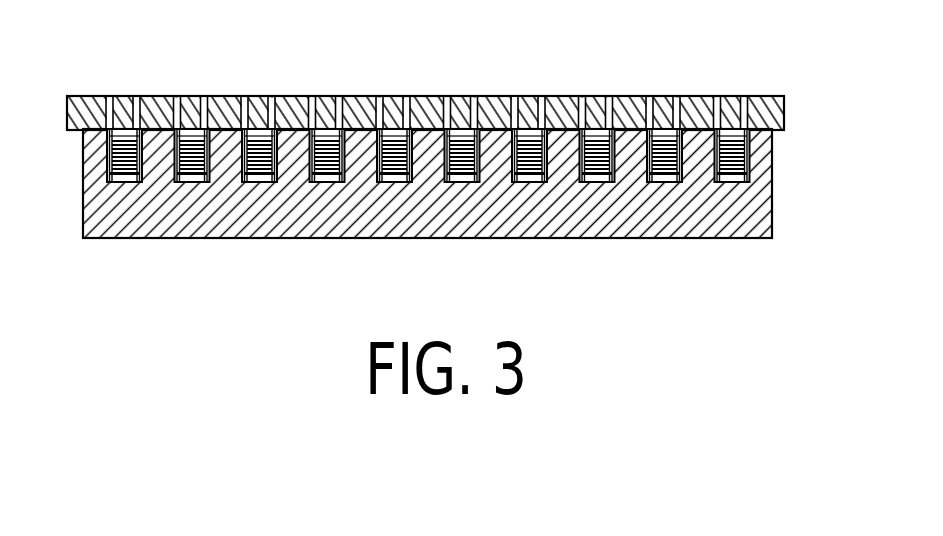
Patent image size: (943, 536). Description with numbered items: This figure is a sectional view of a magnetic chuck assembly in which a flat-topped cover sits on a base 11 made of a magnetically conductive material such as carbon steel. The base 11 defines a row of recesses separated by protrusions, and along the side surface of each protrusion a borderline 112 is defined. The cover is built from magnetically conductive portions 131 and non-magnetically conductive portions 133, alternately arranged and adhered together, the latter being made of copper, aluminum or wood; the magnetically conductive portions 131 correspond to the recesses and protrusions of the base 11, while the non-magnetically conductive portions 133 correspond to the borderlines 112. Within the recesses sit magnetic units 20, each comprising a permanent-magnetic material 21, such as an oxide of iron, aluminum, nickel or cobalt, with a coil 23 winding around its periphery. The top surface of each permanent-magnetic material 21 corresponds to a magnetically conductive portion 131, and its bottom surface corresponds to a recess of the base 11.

The base 11 is at (767, 207).
The magnetically conductive portion 131 is at (427, 96).
The non-magnetically conductive portion 133 is at (512, 96).
The borderline 112 is at (362, 172).
The magnetic unit 20 is at (401, 183).
The permanent-magnetic material 21 is at (445, 223).
The coil 23 is at (465, 168).